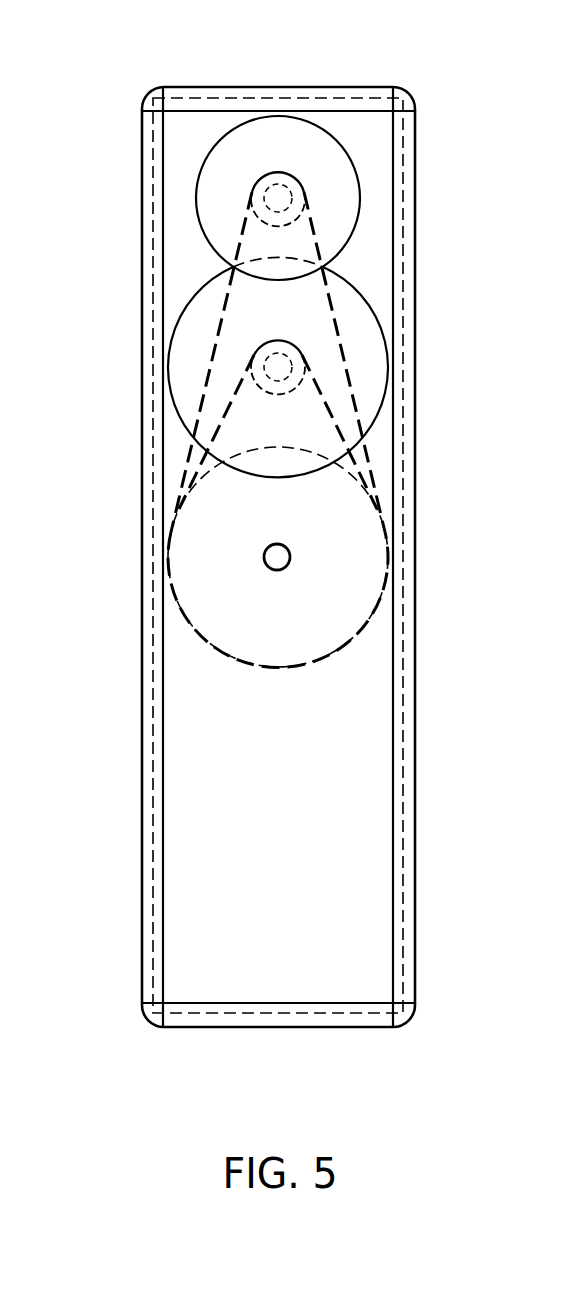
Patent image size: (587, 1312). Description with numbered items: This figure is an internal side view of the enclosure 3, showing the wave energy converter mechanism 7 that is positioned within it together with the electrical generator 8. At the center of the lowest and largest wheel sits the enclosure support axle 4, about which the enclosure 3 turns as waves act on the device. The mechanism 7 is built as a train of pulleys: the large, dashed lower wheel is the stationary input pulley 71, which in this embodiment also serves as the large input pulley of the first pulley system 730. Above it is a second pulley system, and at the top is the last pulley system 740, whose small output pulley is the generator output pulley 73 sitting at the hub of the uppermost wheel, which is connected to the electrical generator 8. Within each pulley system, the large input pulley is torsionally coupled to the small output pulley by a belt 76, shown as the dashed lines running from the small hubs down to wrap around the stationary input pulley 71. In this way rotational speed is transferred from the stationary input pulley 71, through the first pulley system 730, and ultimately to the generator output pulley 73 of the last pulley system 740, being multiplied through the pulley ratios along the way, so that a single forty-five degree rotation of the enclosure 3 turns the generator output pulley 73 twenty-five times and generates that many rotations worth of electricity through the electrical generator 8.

The enclosure 3 is at (142, 758).
The enclosure support axle 4 is at (278, 558).
The wave energy converter mechanism 7 is at (316, 448).
The electrical generator 8 is at (278, 127).
The stationary input pulley 71 is at (240, 643).
The generator output pulley 73 is at (292, 187).
The belt 76 is at (212, 257).
The first pulley system 730 is at (371, 457).
The last pulley system 740 is at (332, 143).